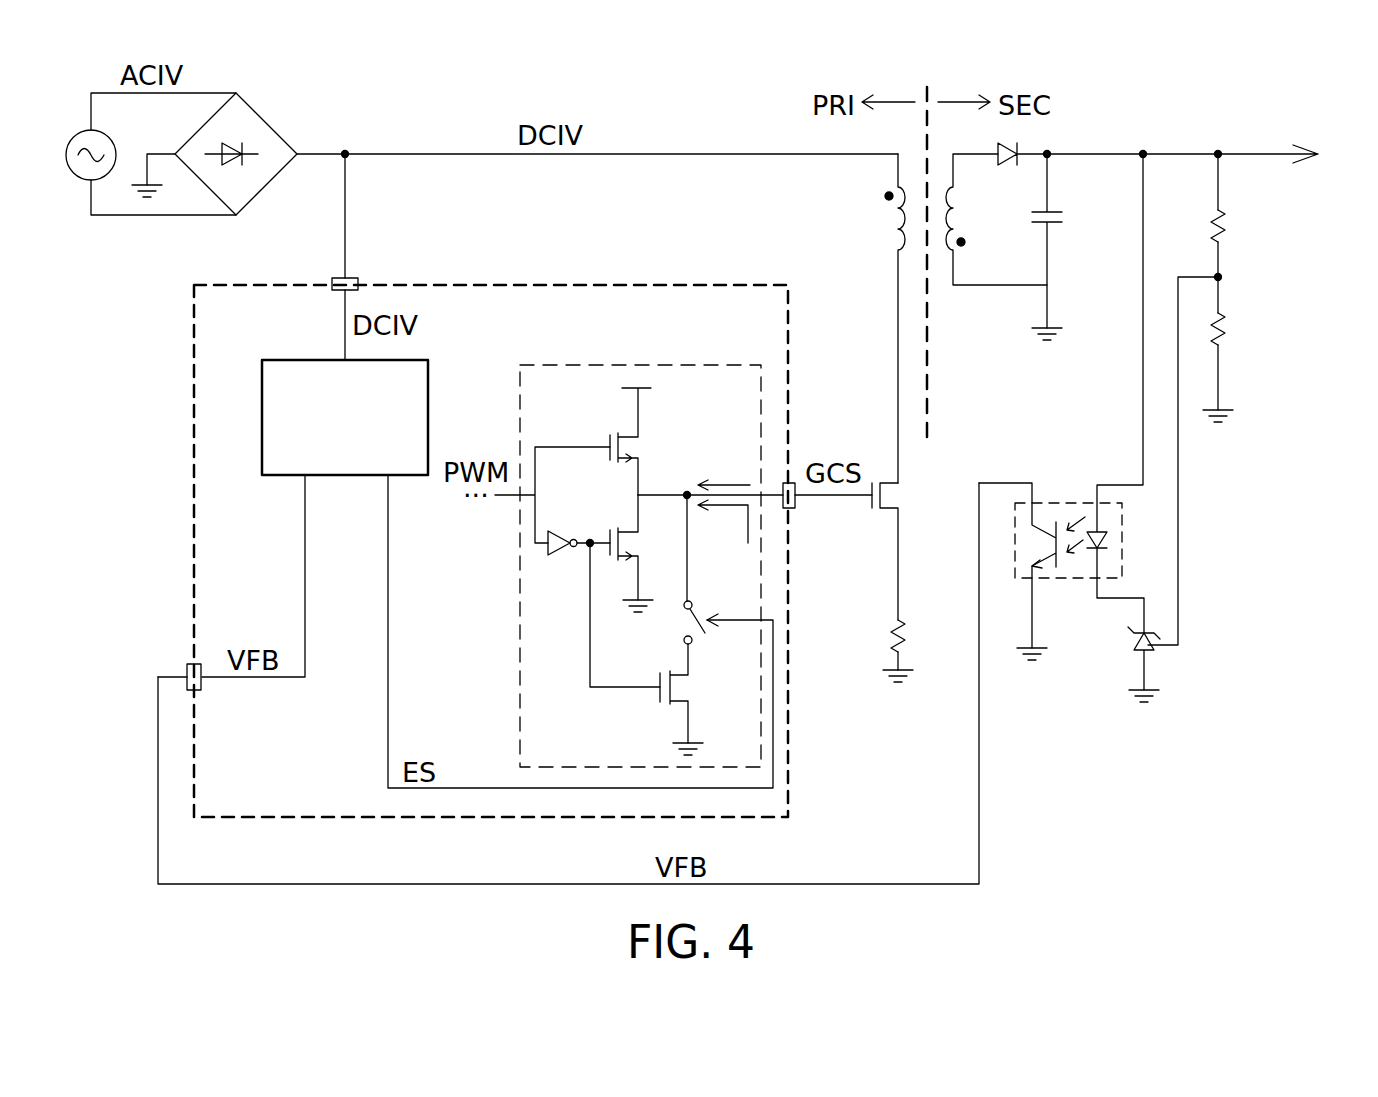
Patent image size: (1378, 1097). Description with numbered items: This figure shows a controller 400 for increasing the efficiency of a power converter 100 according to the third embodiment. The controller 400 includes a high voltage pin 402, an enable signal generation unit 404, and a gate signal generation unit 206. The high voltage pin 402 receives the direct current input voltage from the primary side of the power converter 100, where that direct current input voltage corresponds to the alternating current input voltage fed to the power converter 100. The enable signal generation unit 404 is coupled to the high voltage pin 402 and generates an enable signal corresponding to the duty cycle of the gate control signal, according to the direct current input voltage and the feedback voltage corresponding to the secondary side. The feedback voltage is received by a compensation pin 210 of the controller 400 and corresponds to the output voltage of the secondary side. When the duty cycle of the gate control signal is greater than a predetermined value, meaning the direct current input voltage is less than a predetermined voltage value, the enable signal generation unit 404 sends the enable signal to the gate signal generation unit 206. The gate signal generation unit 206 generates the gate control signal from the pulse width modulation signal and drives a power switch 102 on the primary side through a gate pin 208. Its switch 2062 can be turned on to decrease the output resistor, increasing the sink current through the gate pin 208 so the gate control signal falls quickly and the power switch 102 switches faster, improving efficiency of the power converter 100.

The power converter 100 is at (1252, 90).
The power switch 102 is at (898, 495).
The gate signal generation unit 206 is at (520, 617).
The switch 2062 is at (682, 622).
The gate pin 208 is at (797, 501).
The compensation pin 210 is at (187, 668).
The controller 400 is at (555, 284).
The high voltage pin 402 is at (352, 280).
The enable signal generation unit 404 is at (302, 360).